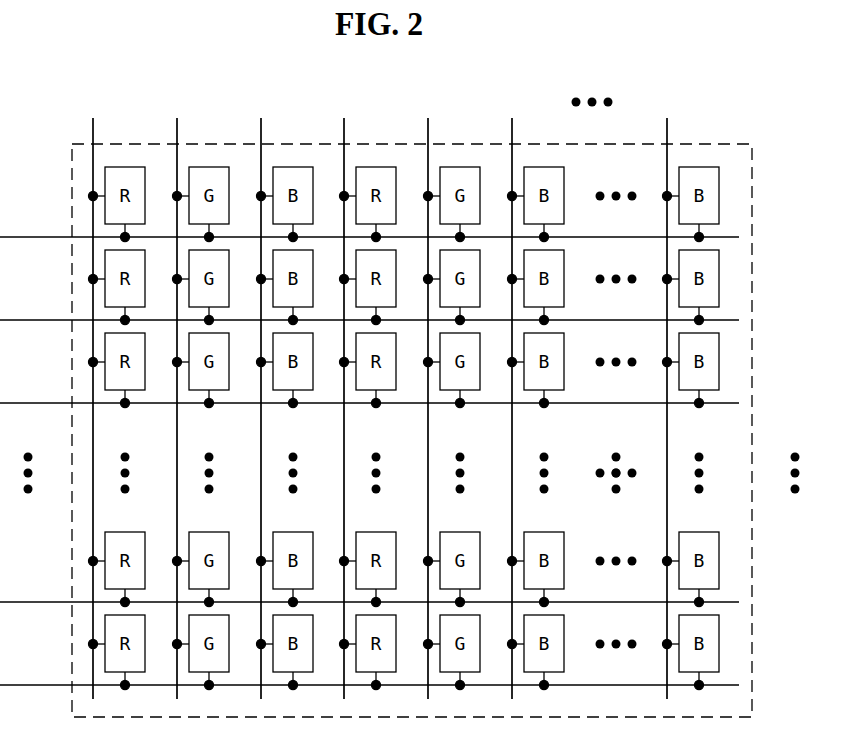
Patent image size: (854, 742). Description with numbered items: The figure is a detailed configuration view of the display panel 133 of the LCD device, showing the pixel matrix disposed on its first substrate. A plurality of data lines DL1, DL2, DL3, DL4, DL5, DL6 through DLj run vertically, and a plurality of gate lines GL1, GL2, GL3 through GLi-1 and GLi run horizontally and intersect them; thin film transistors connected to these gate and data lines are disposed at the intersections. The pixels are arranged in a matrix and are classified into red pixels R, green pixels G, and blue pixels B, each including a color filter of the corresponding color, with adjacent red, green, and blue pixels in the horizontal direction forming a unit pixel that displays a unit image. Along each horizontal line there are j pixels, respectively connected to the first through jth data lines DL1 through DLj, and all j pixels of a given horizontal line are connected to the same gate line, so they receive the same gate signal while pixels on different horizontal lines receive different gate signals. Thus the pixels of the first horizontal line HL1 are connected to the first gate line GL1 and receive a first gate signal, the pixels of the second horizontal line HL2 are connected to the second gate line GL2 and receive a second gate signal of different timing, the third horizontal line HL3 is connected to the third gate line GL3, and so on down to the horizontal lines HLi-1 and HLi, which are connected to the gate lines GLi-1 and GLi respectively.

The display panel 133 is at (709, 143).
The first data line DL1 is at (96, 395).
The second data line DL2 is at (180, 395).
The third data line DL3 is at (264, 395).
The fourth data line DL4 is at (347, 395).
The fifth data line DL5 is at (431, 395).
The sixth data line DL6 is at (515, 395).
The jth data line DLj is at (669, 395).
The first gate line GL1 is at (369, 223).
The second gate line GL2 is at (369, 306).
The third gate line GL3 is at (369, 389).
The (i-1)th gate line GLi-1 is at (369, 588).
The ith gate line GLi is at (369, 671).
The first horizontal line HL1 is at (456, 201).
The second horizontal line HL2 is at (456, 284).
The third horizontal line HL3 is at (456, 367).
The (i-1)th horizontal line HLi-1 is at (467, 566).
The ith horizontal line HLi is at (456, 649).